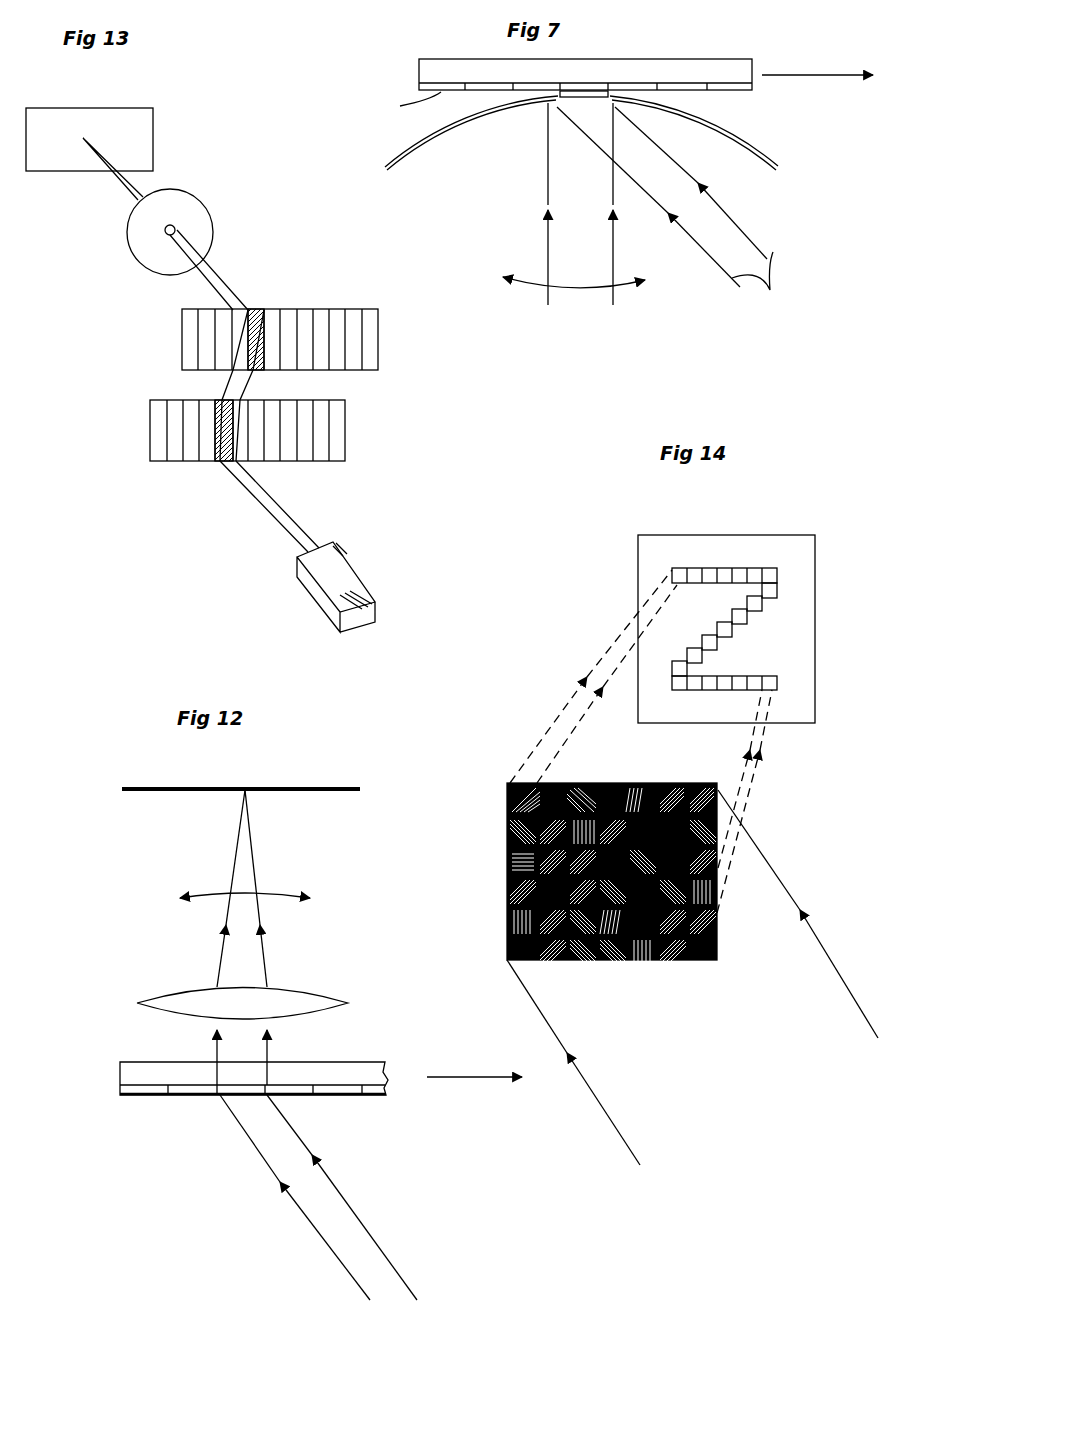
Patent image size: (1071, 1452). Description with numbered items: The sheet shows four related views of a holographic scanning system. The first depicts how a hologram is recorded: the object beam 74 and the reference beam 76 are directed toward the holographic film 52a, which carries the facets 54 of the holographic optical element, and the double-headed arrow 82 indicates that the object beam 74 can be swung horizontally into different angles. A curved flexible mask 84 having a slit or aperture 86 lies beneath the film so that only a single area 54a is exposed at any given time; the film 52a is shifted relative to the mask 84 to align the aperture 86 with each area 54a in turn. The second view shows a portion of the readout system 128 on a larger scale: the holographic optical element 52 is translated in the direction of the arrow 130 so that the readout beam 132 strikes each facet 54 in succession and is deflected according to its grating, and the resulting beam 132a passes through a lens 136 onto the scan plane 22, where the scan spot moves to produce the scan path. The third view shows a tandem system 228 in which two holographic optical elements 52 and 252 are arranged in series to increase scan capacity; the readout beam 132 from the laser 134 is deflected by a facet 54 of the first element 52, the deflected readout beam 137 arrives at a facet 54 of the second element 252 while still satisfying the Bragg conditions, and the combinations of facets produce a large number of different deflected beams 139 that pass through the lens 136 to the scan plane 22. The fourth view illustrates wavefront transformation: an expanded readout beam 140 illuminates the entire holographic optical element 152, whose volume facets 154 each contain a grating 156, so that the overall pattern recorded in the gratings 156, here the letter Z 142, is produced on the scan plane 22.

In FIG. 13, the scan plane 22 is at (155, 117).
In FIG. 14, the scan plane 22 is at (638, 548).
In FIG. 12, the scan plane 22 is at (342, 789).
In FIG. 13, the holographic optical element 52 is at (326, 466).
In FIG. 12, the holographic optical element 52 is at (128, 1055).
In FIG. 7, the holographic film 52a is at (723, 60).
In FIG. 13, the facet 54 is at (260, 310).
In FIG. 7, the facet 54 is at (437, 92).
In FIG. 12, the facet 54 is at (143, 1097).
In FIG. 7, the single area 54a is at (573, 97).
In FIG. 7, the object beam 74 is at (613, 241).
In FIG. 7, the reference beam 76 is at (680, 206).
In FIG. 7, the double-headed arrow 82 is at (580, 290).
In FIG. 7, the curved flexible mask 84 is at (437, 134).
In FIG. 7, the slit or aperture 86 is at (583, 103).
In FIG. 12, the readout system 128 is at (153, 932).
In FIG. 12, the arrow 130 is at (467, 1077).
In FIG. 13, the readout beam 132 is at (270, 507).
In FIG. 12, the readout beam 132 is at (387, 1258).
In FIG. 12, the resulting beam 132a is at (265, 963).
In FIG. 13, the laser 134 is at (372, 592).
In FIG. 13, the scan spot 136 is at (185, 190).
In FIG. 12, the scan spot 136 is at (248, 792).
In FIG. 13, the readout beam 137 is at (245, 378).
In FIG. 13, the deflected beams 139 is at (222, 273).
In FIG. 14, the expanded readout beam 140 is at (833, 972).
In FIG. 14, the letter Z 142 is at (762, 603).
In FIG. 14, the holographic optical element 152 is at (669, 966).
In FIG. 14, the volume facets 154 is at (580, 783).
In FIG. 14, the gratings 156 is at (507, 830).
In FIG. 13, the tandem readout system 228 is at (162, 358).
In FIG. 13, the second holographic optical element 252 is at (389, 338).